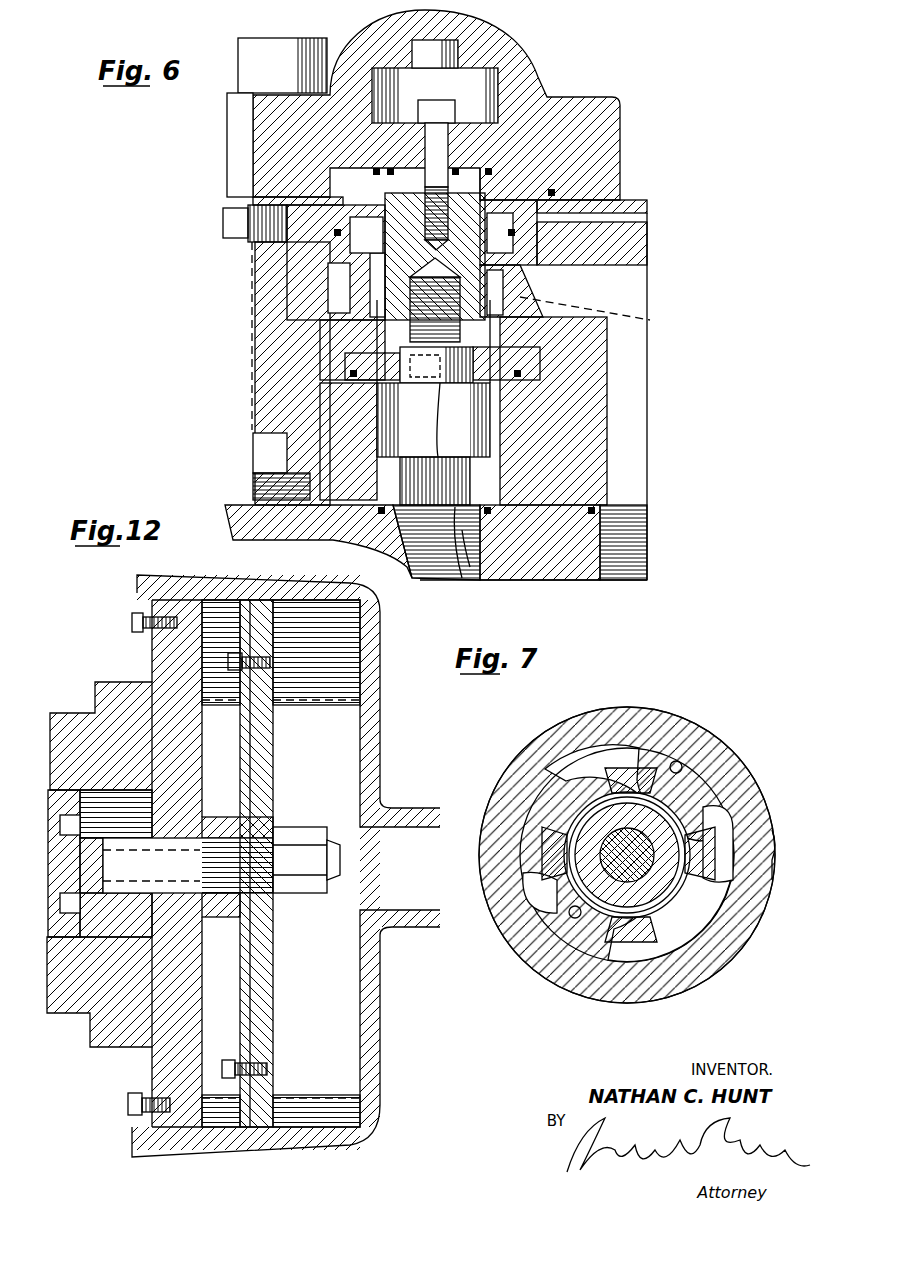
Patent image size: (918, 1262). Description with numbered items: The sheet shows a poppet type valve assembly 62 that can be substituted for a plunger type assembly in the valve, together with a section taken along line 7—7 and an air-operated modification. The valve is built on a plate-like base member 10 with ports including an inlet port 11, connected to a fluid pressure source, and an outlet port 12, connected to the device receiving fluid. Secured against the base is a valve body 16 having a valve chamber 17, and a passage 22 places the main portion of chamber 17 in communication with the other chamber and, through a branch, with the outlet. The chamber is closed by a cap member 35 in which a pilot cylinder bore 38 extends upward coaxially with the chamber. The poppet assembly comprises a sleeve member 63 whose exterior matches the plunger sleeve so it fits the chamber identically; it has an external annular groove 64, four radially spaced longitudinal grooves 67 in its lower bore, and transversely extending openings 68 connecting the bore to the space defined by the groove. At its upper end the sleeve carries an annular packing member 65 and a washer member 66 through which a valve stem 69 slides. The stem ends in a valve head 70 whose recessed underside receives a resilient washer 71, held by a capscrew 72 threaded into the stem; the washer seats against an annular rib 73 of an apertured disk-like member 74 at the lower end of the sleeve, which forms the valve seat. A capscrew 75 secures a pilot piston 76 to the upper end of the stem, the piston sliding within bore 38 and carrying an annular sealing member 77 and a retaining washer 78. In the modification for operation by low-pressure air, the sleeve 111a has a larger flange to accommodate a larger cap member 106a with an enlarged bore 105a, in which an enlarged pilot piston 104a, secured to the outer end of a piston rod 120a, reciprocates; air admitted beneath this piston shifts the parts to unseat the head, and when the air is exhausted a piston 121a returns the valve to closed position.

In FIG. 6, the section line 7— 7 is at (149, 322).
In FIG. 6, the base member 10 is at (535, 570).
In FIG. 6, the inlet port 11 is at (470, 567).
In FIG. 6, the outlet port 12 is at (635, 567).
In FIG. 6, the valve body 16 is at (652, 436).
In FIG. 7, the valve body 16 is at (654, 695).
In FIG. 6, the valve chamber 17 is at (540, 356).
In FIG. 7, the valve chamber 17 is at (697, 730).
In FIG. 7, the passage 22 is at (760, 832).
In FIG. 6, the cap member 35 is at (603, 88).
In FIG. 6, the pilot cylinder bore 38 is at (500, 90).
In FIG. 6, the poppet type valve assembly 62 is at (363, 367).
In FIG. 7, the poppet type valve assembly 62 is at (515, 832).
In FIG. 6, the sleeve member 63 is at (312, 358).
In FIG. 6, the annular groove 64 is at (545, 283).
In FIG. 7, the annular groove 64 is at (570, 782).
In FIG. 6, the annular packing member 65 is at (540, 246).
In FIG. 6, the washer member 66 is at (363, 202).
In FIG. 6, the grooves 67 is at (607, 314).
In FIG. 7, the grooves 67 is at (600, 840).
In FIG. 6, the transversely extending openings 68 is at (262, 276).
In FIG. 7, the transversely extending openings 68 is at (717, 797).
In FIG. 6, the valve stem 69 is at (520, 195).
In FIG. 6, the valve head 70 is at (540, 366).
In FIG. 7, the valve head 70 is at (658, 903).
In FIG. 6, the washer 71 is at (450, 507).
In FIG. 6, the capscrew 72 is at (437, 507).
In FIG. 7, the capscrew 72 is at (597, 838).
In FIG. 6, the annular rib 73 is at (345, 372).
In FIG. 6, the disk-like member 74 is at (373, 380).
In FIG. 6, the capscrew 75 is at (432, 105).
In FIG. 6, the pilot piston 76 is at (400, 173).
In FIG. 6, the annular sealing member 77 is at (377, 187).
In FIG. 6, the retaining washer 78 is at (460, 136).
In FIG. 12, the enlarged pilot piston 104a is at (267, 1023).
In FIG. 12, the enlarged bore 105a is at (317, 1127).
In FIG. 12, the cap member 106a is at (292, 578).
In FIG. 12, the sleeve 111a is at (85, 722).
In FIG. 12, the piston rod 120a is at (118, 893).
In FIG. 12, the piston 121a is at (55, 805).